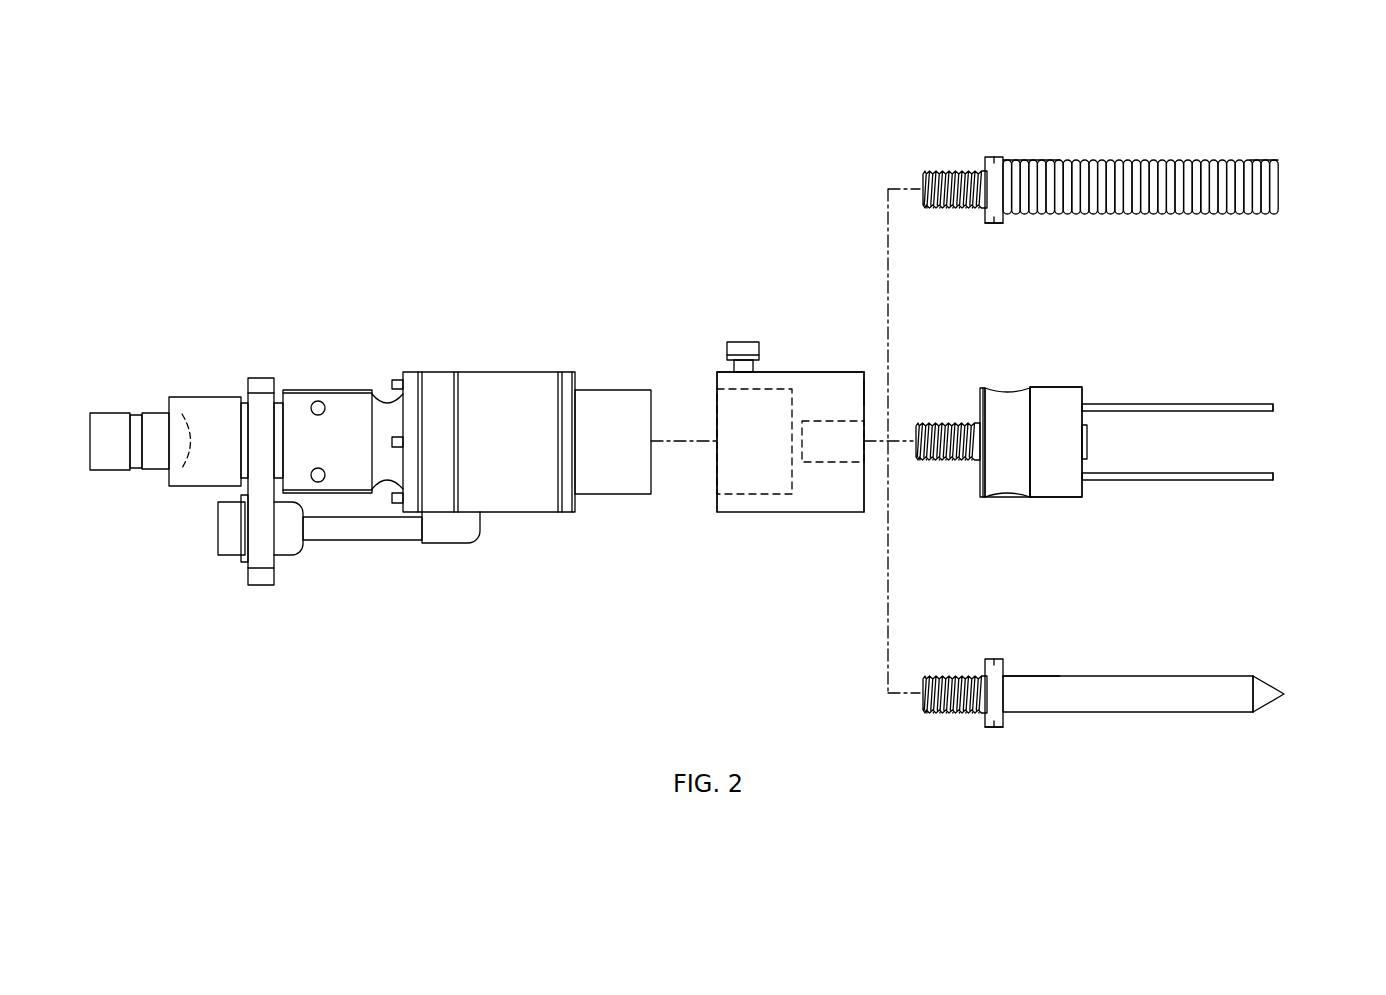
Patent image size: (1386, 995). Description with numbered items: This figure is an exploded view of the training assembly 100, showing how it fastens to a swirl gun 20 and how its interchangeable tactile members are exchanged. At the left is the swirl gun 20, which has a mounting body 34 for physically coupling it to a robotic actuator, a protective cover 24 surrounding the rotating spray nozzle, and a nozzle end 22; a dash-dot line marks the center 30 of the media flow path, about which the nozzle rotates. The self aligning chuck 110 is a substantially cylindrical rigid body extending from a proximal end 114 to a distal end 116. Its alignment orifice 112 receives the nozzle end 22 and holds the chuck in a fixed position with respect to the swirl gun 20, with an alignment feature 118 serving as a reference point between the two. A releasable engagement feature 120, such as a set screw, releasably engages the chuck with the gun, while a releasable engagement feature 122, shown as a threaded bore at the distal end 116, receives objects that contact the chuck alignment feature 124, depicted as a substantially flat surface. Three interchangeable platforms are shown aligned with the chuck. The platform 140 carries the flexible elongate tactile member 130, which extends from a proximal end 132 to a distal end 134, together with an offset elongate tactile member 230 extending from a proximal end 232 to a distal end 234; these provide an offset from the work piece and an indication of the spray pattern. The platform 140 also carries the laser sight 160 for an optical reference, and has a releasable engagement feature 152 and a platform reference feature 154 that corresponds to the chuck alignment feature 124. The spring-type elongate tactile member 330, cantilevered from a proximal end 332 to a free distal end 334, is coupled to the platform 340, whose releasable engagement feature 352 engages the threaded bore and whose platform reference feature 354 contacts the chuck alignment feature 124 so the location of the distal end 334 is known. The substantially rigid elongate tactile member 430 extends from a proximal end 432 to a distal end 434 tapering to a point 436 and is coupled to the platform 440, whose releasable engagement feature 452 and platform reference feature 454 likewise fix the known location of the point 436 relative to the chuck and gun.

The swirl gun 20 is at (512, 378).
The nozzle end 22 is at (664, 388).
The protective cover 24 is at (608, 390).
The center 30 is at (688, 442).
The mounting body 34 is at (346, 401).
The training assembly 100 is at (823, 190).
The self aligning chuck 110 is at (835, 382).
The alignment orifice 112 is at (780, 389).
The proximal end 114 is at (710, 370).
The distal end 116 is at (870, 370).
The alignment feature 118 is at (790, 453).
The releasable engagement feature 120 is at (743, 340).
The releasable engagement feature 122 is at (838, 463).
The chuck alignment feature 124 is at (864, 392).
The elongate tactile member 130 is at (1160, 403).
The proximal end 132 is at (1003, 386).
The distal end 134 is at (1273, 400).
The platform 140 is at (1057, 392).
The releasable engagement feature 152 is at (940, 462).
The platform reference feature 154 is at (981, 396).
The laser sight 160 is at (1087, 441).
The offset elongate tactile member 230 is at (1160, 481).
The proximal end 232 is at (1005, 500).
The distal end 234 is at (1273, 483).
The elongate tactile member 330 is at (1153, 161).
The proximal end 332 is at (1030, 141).
The distal end 334 is at (1262, 150).
The platform 340 is at (993, 157).
The releasable engagement feature 352 is at (940, 172).
The platform reference feature 354 is at (982, 220).
The elongate tactile member 430 is at (1150, 684).
The proximal end 432 is at (1030, 641).
The distal end 434 is at (1273, 668).
The point 436 is at (1263, 698).
The platform 440 is at (993, 659).
The releasable engagement feature 452 is at (940, 677).
The platform reference feature 454 is at (982, 720).